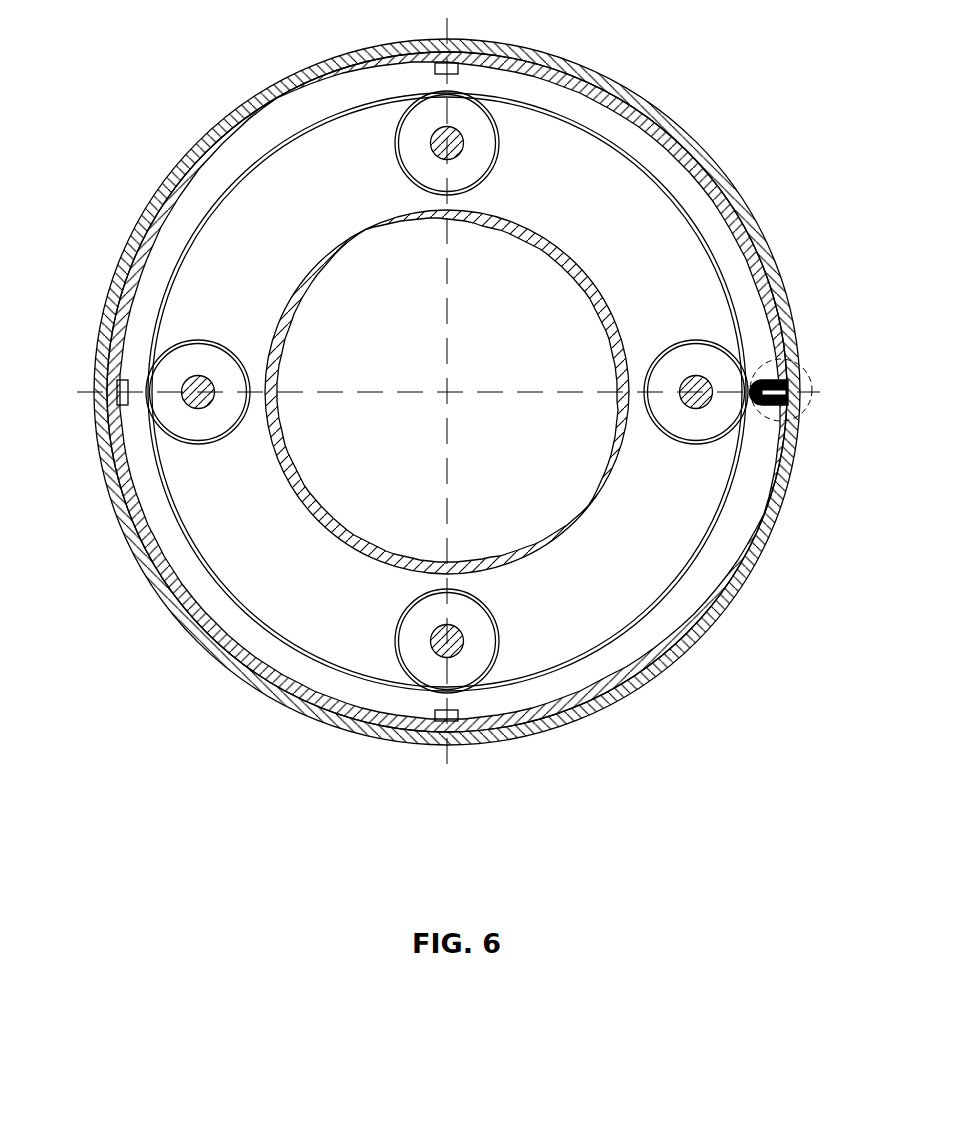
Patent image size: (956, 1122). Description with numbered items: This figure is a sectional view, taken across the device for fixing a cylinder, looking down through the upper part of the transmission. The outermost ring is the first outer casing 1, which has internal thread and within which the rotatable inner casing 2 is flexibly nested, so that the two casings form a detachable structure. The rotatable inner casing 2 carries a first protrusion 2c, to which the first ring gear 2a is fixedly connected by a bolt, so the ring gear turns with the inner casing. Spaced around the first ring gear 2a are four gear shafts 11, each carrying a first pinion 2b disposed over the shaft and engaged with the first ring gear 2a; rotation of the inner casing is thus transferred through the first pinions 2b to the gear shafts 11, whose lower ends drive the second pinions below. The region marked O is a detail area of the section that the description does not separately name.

The first outer casing 1 is at (208, 138).
The rotatable inner casing 2 is at (617, 515).
The first ring gear 2a is at (705, 222).
The first pinion 2b is at (488, 135).
The first protrusion 2c is at (123, 390).
The gear shaft 11 is at (207, 390).
The detail region O is at (805, 407).